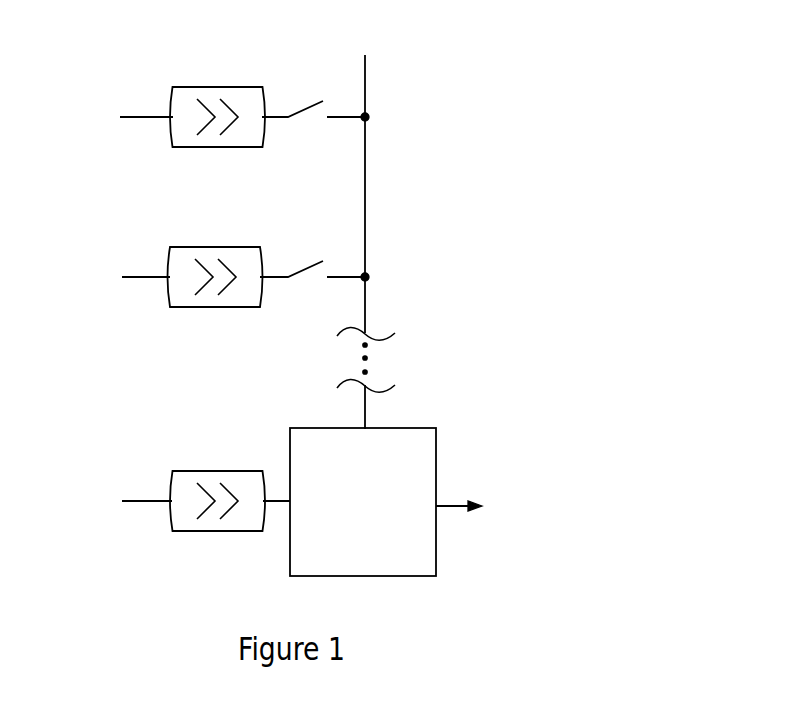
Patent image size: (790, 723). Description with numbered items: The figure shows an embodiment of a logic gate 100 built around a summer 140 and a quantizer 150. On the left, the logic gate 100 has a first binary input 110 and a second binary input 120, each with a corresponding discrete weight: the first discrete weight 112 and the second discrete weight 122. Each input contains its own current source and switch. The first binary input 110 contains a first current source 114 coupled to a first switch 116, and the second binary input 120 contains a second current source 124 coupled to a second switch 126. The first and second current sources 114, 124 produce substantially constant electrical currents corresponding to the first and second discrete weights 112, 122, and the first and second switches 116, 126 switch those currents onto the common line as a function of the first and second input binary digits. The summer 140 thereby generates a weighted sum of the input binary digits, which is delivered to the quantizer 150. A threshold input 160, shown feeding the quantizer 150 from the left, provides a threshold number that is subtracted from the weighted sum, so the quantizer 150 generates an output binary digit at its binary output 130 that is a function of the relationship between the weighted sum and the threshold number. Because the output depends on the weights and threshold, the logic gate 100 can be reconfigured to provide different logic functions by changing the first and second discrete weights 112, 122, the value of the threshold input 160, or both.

The logic gate 100 is at (495, 58).
The first binary input 110 is at (153, 51).
The first discrete weight 112 is at (68, 94).
The first current source 114 is at (202, 88).
The first switch 116 is at (315, 103).
The second binary input 120 is at (153, 211).
The second discrete weight 122 is at (68, 254).
The second current source 124 is at (202, 248).
The second switch 126 is at (318, 261).
The binary output 130 is at (486, 478).
The summer 140 is at (424, 341).
The quantizer 150 is at (345, 535).
The threshold input 160 is at (164, 457).